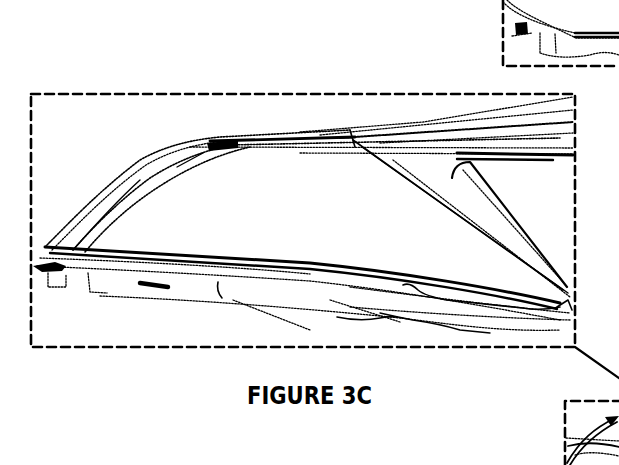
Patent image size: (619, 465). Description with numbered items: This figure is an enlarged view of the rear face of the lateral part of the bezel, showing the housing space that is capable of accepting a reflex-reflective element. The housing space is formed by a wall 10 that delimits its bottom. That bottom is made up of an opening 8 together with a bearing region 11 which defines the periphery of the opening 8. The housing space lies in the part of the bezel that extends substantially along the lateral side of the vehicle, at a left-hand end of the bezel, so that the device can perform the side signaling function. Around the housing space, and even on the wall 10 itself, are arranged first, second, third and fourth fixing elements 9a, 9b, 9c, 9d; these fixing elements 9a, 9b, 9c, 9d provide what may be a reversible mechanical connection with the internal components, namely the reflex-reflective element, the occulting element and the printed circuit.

The opening 8 is at (283, 233).
The first fixing element 9a is at (223, 140).
The second fixing element 9b is at (386, 320).
The third fixing element 9c is at (149, 273).
The fourth fixing element 9d is at (497, 308).
The wall 10 is at (110, 203).
The bearing region 11 is at (208, 250).